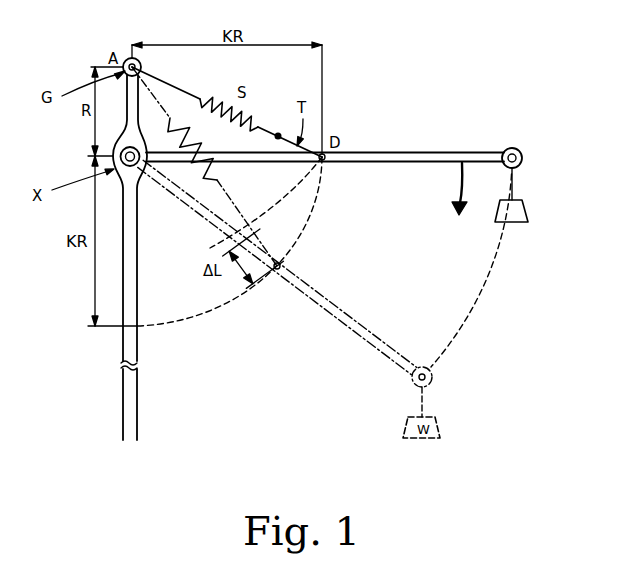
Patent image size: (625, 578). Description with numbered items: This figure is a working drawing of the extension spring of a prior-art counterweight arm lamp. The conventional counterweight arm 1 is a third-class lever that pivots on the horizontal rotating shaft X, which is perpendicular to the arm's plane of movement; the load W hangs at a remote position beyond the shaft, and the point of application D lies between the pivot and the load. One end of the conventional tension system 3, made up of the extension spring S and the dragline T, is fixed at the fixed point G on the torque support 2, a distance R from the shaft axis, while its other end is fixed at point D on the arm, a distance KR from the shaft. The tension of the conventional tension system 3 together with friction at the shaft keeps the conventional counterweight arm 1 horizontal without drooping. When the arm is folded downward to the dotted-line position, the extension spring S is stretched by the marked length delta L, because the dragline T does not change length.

The conventional counterweight arm 1 is at (412, 148).
The torque support 2 is at (141, 93).
The conventional tension system 3 is at (284, 90).